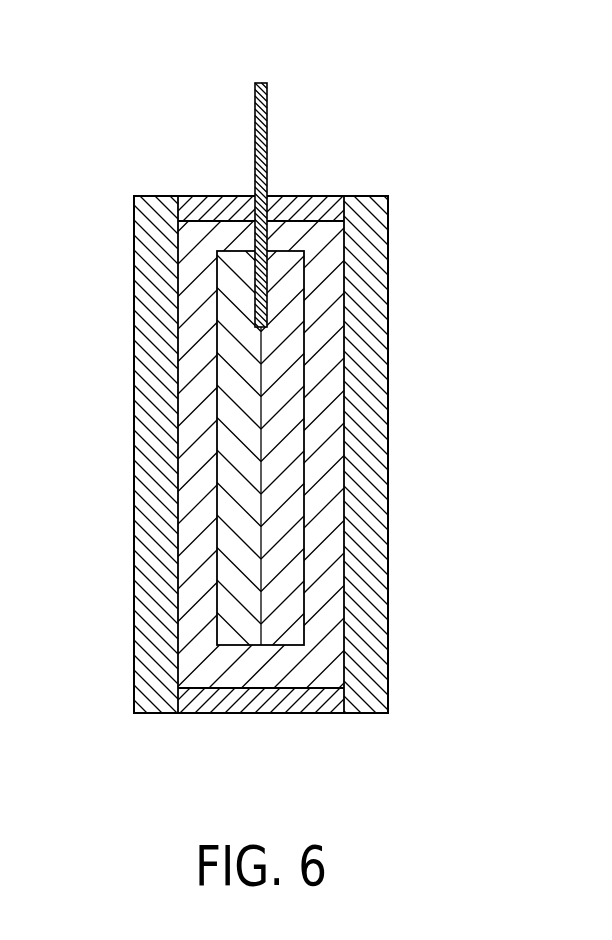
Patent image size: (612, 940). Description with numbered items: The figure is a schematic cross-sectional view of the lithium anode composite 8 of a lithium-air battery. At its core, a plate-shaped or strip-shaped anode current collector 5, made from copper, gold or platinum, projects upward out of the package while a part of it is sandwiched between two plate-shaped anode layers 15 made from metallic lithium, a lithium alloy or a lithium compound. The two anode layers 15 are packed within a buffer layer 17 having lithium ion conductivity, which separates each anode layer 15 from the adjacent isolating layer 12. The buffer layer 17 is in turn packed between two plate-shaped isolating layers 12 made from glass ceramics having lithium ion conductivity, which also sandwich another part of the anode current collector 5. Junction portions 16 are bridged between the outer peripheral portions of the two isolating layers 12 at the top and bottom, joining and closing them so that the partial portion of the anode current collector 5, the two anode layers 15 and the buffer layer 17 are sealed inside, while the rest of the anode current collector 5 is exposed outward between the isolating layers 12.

The anode current collector 5 is at (268, 127).
The anode composite 8 is at (364, 118).
The isolating layer 12 is at (133, 548).
The anode layer 15 is at (217, 422).
The junction portion 16 is at (331, 196).
The buffer layer 17 is at (333, 476).